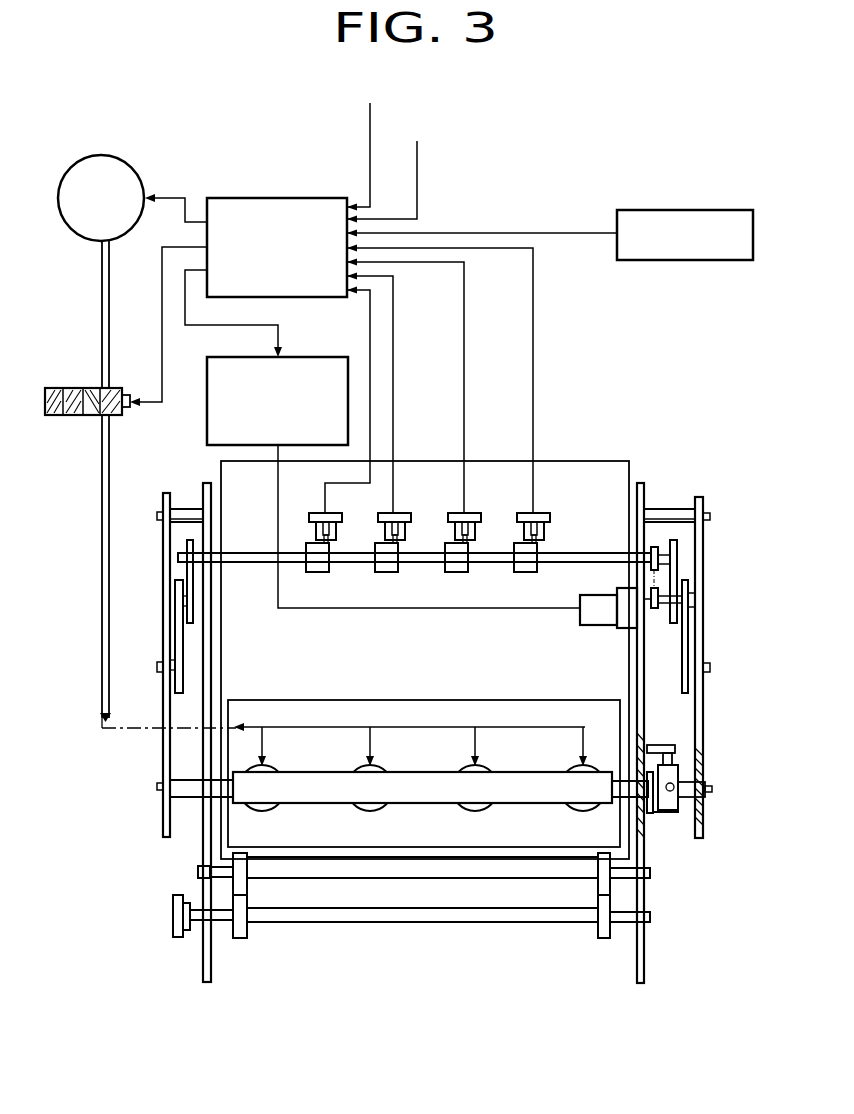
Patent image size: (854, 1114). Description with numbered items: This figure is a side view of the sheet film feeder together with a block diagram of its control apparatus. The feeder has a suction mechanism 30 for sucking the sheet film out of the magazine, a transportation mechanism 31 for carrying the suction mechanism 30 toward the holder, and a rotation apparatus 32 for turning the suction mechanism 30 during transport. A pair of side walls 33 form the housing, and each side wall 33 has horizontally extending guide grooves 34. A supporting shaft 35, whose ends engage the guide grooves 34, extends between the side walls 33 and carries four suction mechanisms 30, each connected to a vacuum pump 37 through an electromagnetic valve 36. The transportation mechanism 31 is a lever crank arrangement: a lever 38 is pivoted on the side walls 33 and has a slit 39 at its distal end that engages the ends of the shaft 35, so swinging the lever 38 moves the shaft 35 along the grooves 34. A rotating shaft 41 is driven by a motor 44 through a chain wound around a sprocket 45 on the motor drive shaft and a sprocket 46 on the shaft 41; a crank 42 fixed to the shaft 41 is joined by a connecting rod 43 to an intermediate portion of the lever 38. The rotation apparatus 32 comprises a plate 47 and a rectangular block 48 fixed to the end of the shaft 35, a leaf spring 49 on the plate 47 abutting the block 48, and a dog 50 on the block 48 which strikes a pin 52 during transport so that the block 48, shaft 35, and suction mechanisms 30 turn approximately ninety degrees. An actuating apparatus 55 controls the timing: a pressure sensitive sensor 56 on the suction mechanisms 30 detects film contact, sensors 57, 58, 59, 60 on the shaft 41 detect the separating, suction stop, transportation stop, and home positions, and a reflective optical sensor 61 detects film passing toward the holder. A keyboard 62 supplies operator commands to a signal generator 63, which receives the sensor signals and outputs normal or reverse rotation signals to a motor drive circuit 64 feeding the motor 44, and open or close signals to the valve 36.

The suction mechanism 30 is at (480, 802).
The transportation mechanism 31 is at (718, 578).
The rotation apparatus 32 is at (726, 762).
The side wall 33 is at (637, 664).
The guide groove 34 is at (649, 764).
The supporting shaft 35 is at (414, 798).
The electromagnetic valve 36 is at (84, 415).
The vacuum pump 37 is at (84, 232).
The lever 38 is at (703, 600).
The slit 39 is at (700, 790).
The rotating shaft 41 is at (576, 553).
The crank 42 is at (678, 561).
The connecting rod 43 is at (688, 622).
The motor 44 is at (600, 598).
The sprocket 45 is at (657, 609).
The sprocket 46 is at (656, 544).
The plate 47 is at (650, 814).
The block 48 is at (680, 806).
The leaf spring 49 is at (665, 812).
The dog 50 is at (676, 761).
The pin 52 is at (667, 746).
The actuating apparatus 55 is at (447, 207).
The pressure sensitive sensor 56 is at (446, 128).
The sensor 57 is at (543, 513).
The sensor 58 is at (474, 513).
The sensor 59 is at (406, 513).
The sensor 60 is at (316, 513).
The reflective optical sensor 61 is at (380, 90).
The keyboard 62 is at (679, 208).
The signal generator 63 is at (270, 198).
The motor drive circuit 64 is at (310, 358).